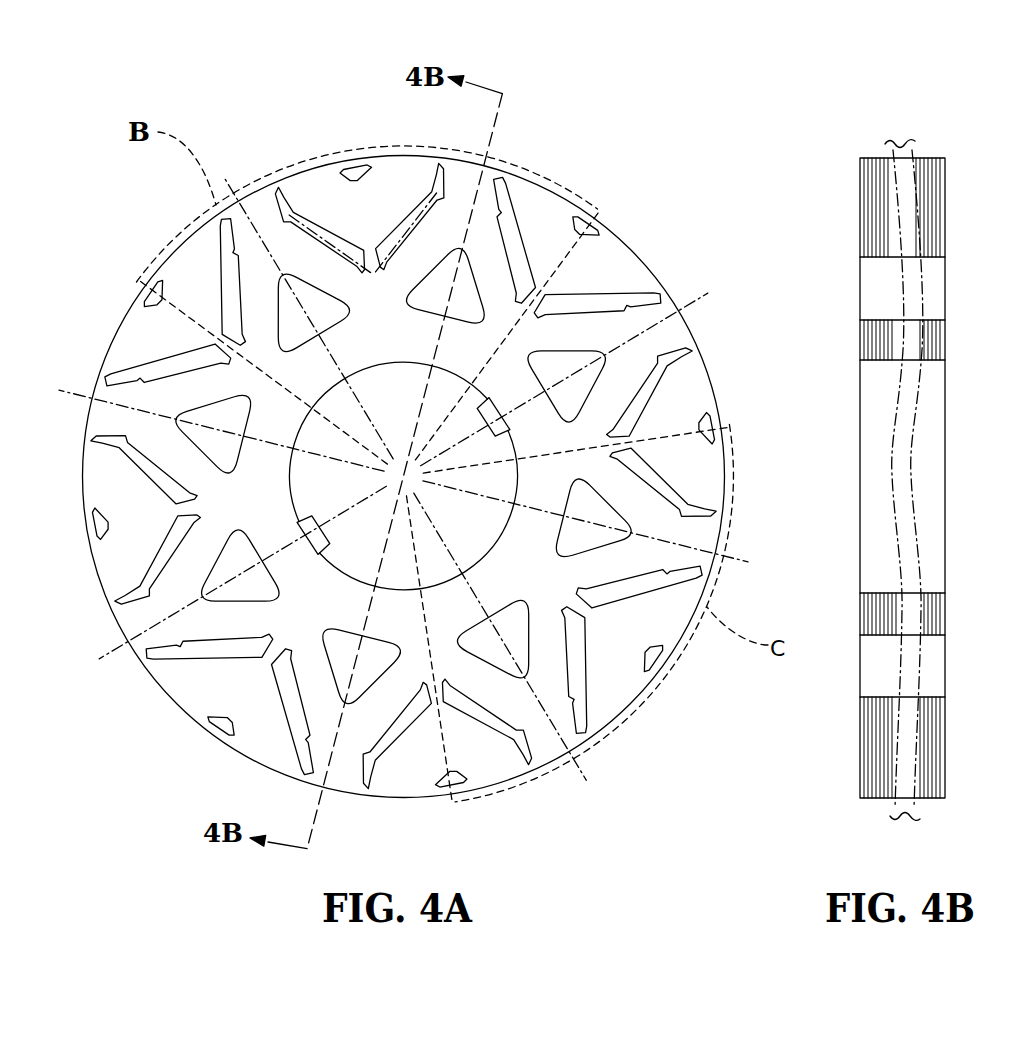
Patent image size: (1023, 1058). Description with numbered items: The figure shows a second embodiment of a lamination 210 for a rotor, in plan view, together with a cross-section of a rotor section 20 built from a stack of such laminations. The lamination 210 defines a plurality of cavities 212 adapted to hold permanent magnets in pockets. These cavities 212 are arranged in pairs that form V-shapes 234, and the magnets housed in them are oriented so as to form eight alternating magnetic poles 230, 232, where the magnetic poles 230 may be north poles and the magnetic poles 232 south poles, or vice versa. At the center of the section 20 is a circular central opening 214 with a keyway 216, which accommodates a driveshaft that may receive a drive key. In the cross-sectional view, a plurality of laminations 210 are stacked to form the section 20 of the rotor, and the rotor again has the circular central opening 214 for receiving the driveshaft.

In FIG. 4A, the lamination 210 is at (327, 82).
In FIG. 4B, the lamination 210 is at (876, 172).
In FIG. 4A, the cavities 212 is at (407, 227).
In FIG. 4A, the circular central opening 214 is at (457, 375).
In FIG. 4B, the circular central opening 214 is at (882, 362).
In FIG. 4A, the keyway 216 is at (498, 438).
In FIG. 4A, the magnetic poles 230 is at (313, 162).
In FIG. 4A, the magnetic poles 232 is at (160, 267).
In FIG. 4A, the V-shapes 234 is at (243, 175).
In FIG. 4B, the section 20 is at (968, 612).